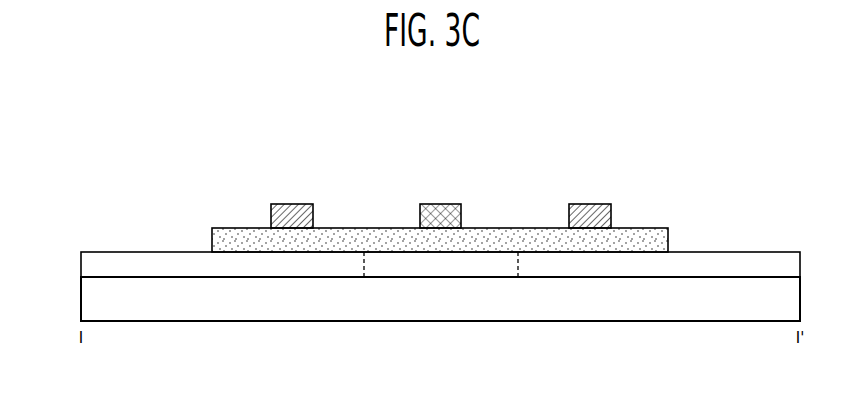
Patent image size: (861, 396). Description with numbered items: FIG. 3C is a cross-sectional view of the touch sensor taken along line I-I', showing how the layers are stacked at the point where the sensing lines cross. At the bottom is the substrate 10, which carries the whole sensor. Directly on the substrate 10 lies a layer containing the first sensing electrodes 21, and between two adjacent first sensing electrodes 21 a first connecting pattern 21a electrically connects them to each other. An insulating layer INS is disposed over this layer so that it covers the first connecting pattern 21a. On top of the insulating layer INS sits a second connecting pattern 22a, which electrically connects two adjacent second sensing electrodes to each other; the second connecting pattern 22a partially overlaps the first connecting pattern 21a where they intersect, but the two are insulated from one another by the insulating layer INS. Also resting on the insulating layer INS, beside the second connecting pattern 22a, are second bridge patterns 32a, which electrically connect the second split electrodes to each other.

The substrate 10 is at (81, 306).
The first sensing electrodes 21 is at (252, 269).
The first connecting patterns 21a is at (445, 270).
The insulating layers INS is at (212, 241).
The second bridge patterns 32a is at (293, 204).
The second connecting patterns 22a is at (440, 204).